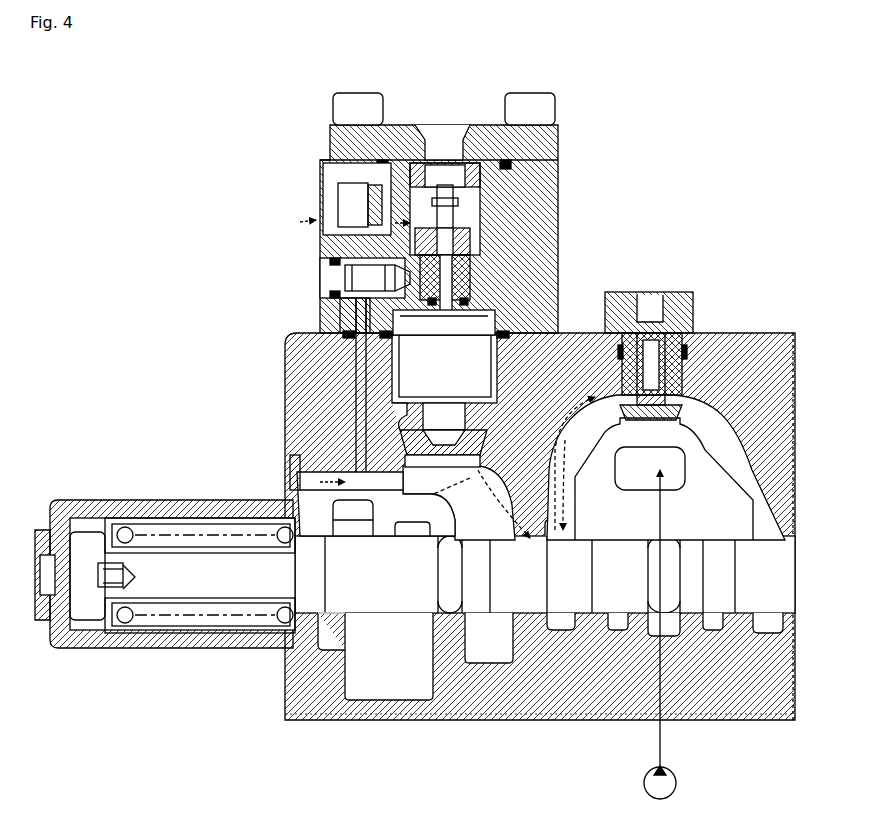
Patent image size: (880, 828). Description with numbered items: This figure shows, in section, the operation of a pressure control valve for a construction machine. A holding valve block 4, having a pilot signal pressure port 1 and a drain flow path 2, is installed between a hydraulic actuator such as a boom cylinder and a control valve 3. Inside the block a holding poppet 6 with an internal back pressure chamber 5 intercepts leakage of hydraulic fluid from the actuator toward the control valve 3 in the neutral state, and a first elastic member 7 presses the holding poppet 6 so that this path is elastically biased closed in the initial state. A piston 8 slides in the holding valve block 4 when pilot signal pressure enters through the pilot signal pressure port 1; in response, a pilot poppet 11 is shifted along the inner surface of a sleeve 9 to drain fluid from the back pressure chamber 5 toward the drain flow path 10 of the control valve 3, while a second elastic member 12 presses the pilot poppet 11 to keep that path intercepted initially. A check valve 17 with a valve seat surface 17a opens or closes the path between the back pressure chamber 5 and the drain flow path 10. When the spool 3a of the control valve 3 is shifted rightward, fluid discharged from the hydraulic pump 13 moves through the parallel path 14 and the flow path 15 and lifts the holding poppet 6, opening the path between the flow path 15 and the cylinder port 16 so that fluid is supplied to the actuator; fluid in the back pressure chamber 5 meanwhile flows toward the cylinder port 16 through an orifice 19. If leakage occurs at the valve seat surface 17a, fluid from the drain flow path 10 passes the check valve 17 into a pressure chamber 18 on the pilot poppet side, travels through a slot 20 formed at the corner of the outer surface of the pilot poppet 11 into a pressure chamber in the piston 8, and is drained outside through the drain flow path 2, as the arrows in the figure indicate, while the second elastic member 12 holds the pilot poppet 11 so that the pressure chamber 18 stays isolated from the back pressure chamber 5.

The pilot signal pressure port 1 is at (443, 143).
The drain flow path 2 is at (357, 207).
The control valve 3 is at (274, 452).
The spool 3a is at (565, 498).
The holding valve block 4 is at (562, 126).
The back pressure chamber 5 is at (395, 402).
The holding poppet 6 is at (497, 345).
The first elastic member 7 is at (392, 380).
The piston 8 is at (503, 186).
The sleeve 9 is at (472, 313).
The drain flow path 10 is at (282, 447).
The pilot poppet 11 is at (473, 232).
The second elastic member 12 is at (457, 226).
The hydraulic pump 13 is at (677, 779).
The parallel path 14 is at (530, 600).
The flow path 15 is at (485, 515).
The cylinder port 16 is at (380, 440).
The check valve 17 is at (335, 290).
The valve seat surface 17a is at (342, 325).
The pressure chamber 18 is at (338, 257).
The orifice 19 is at (600, 297).
The slot 20 is at (490, 258).